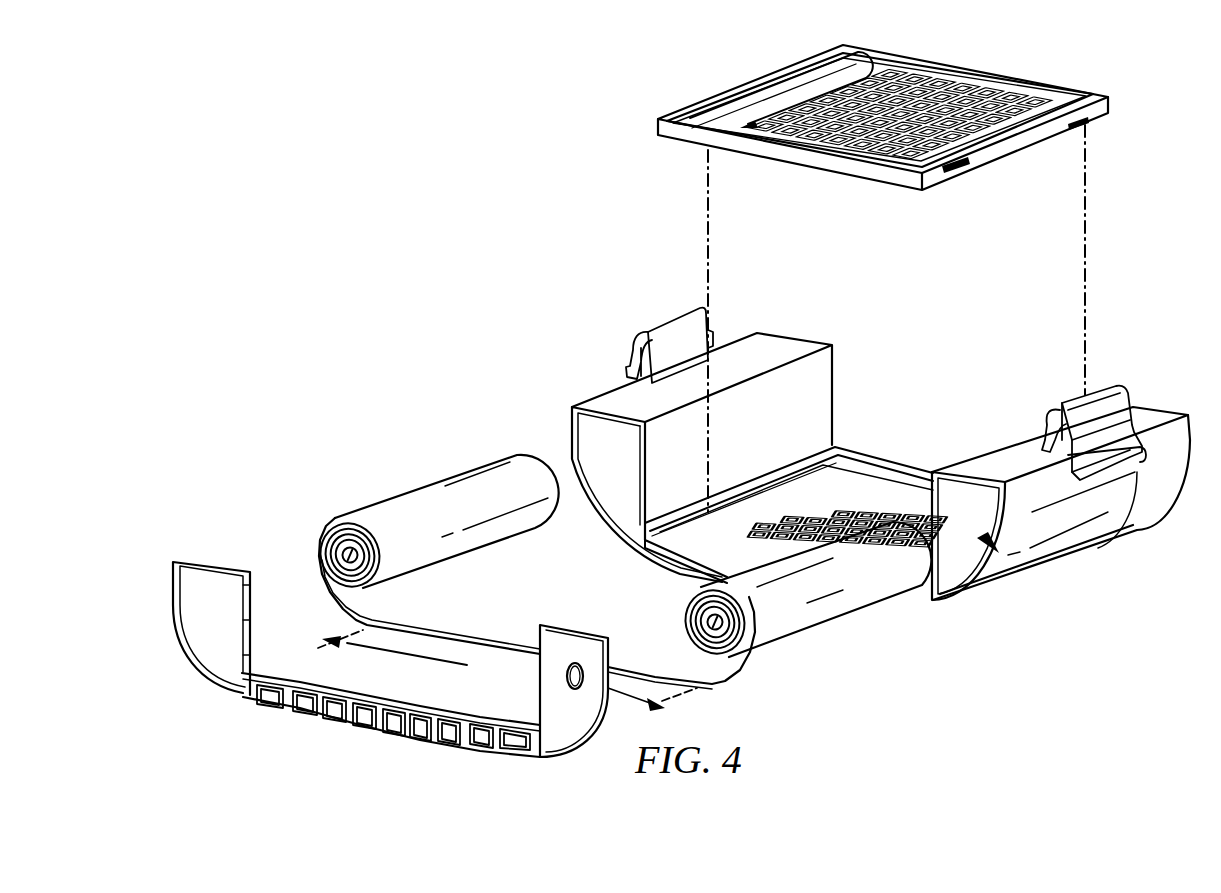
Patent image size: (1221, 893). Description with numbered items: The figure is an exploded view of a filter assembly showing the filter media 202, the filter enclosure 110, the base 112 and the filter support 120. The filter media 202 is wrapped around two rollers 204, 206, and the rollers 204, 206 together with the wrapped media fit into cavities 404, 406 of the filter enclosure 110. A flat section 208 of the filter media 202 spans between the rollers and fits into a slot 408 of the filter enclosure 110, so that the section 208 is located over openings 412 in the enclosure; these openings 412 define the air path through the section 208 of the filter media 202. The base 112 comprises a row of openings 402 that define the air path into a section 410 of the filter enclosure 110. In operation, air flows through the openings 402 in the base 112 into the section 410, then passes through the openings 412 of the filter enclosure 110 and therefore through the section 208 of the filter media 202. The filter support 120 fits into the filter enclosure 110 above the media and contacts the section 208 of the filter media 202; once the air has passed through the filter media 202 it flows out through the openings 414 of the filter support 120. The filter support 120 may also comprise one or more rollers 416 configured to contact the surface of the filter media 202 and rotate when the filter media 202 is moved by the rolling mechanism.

The filter enclosure 110 is at (1083, 553).
The base 112 is at (211, 562).
The filter support 120 is at (978, 74).
The filter media 202 is at (445, 485).
The roller 204 is at (349, 556).
The roller 206 is at (706, 622).
The section of filter media 208 is at (540, 678).
The openings 402 is at (370, 718).
The cavity 404 is at (582, 438).
The cavity 406 is at (1000, 558).
The slot 408 is at (627, 527).
The section of filter enclosure 410 is at (672, 556).
The openings 412 is at (892, 470).
The openings 414 is at (903, 72).
The rollers 416 is at (778, 90).